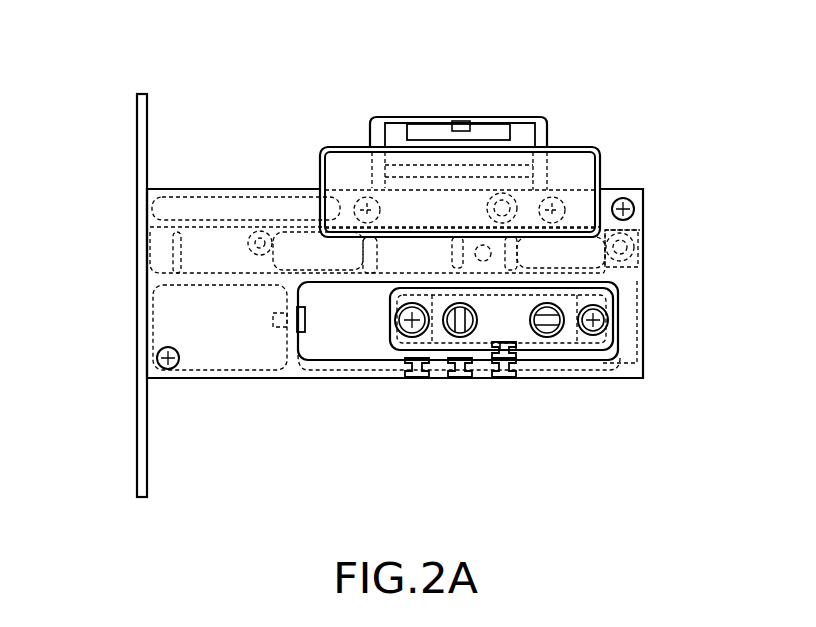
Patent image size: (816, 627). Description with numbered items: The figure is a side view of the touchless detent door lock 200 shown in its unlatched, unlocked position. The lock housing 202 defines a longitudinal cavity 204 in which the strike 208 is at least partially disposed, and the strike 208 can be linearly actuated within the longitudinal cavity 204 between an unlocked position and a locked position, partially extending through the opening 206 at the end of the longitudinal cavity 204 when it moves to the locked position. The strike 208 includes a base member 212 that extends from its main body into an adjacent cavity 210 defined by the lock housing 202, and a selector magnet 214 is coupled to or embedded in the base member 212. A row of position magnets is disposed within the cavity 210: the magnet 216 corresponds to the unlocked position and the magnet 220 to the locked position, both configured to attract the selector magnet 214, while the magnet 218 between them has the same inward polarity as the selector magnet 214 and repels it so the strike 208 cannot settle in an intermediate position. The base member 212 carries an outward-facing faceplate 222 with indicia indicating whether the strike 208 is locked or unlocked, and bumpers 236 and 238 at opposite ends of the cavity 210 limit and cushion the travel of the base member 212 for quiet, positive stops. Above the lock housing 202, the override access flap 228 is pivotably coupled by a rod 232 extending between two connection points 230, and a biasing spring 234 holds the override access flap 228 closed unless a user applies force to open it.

The touchless detent door lock 200 is at (640, 74).
The lock housing 202 is at (624, 190).
The longitudinal cavity 204 is at (639, 248).
The opening 206 is at (137, 252).
The strike 208 is at (631, 264).
The cavity 210 is at (323, 352).
The base member 212 is at (517, 375).
The selector magnet 214 is at (517, 351).
The position magnet 216 is at (503, 378).
The position magnet 218 is at (461, 376).
The position magnet 220 is at (417, 373).
The faceplate 222 is at (604, 343).
The override access flap 228 is at (320, 172).
The connection points 230 is at (377, 122).
The rod 232 is at (409, 126).
The biasing spring 234 is at (464, 126).
The bumper 236 is at (297, 327).
The bumper 238 is at (615, 313).